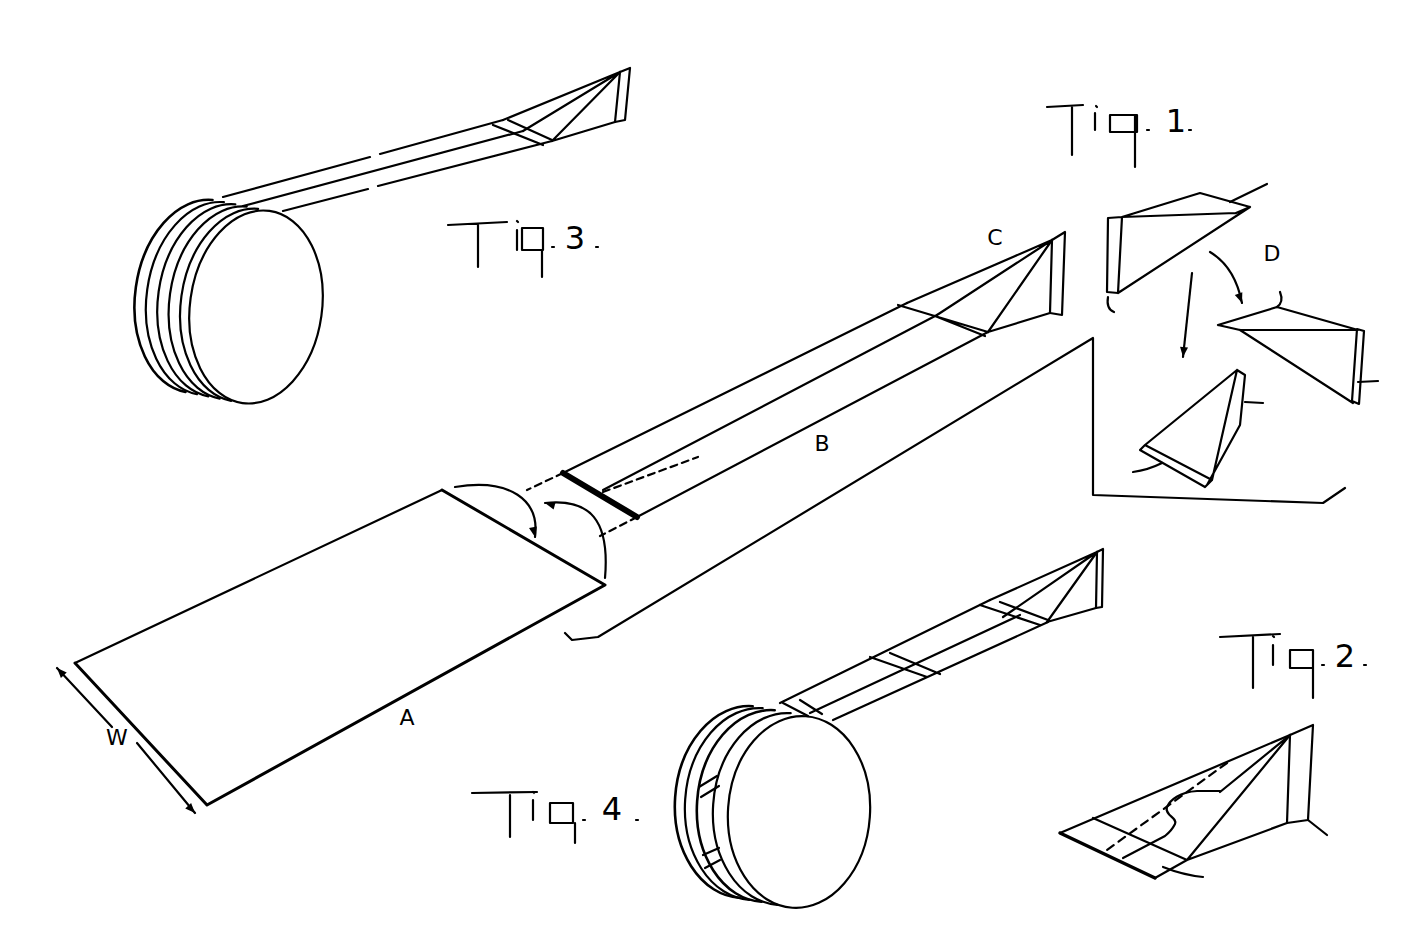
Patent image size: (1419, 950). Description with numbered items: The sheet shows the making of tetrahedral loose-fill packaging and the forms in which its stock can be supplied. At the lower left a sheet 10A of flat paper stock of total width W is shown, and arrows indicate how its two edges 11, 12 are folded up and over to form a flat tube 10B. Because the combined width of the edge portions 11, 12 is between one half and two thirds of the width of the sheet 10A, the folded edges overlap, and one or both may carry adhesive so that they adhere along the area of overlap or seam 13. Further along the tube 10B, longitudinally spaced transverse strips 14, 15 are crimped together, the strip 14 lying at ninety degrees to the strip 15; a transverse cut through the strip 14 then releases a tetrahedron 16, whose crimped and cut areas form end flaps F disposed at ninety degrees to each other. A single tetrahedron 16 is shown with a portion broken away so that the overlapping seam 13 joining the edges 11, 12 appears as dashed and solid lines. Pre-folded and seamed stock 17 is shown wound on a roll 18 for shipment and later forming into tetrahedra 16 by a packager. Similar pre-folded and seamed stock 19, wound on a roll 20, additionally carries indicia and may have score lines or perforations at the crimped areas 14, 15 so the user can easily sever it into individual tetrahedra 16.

In FIG. 1, the sheet of flat stock 10A is at (385, 608).
In FIG. 1, the flat tube 10B is at (819, 386).
In FIG. 1, the edge 11 is at (463, 660).
In FIG. 1, the edge 12 is at (344, 536).
In FIG. 1, the seam 13 is at (660, 463).
In FIG. 2, the seam 13 is at (1158, 828).
In FIG. 1, the transverse strip 14 is at (985, 337).
In FIG. 3, the transverse strip 14 is at (542, 145).
In FIG. 4, the transverse strip 14 is at (1046, 630).
In FIG. 1, the transverse strip 15 is at (1052, 317).
In FIG. 3, the transverse strip 15 is at (622, 122).
In FIG. 4, the transverse strip 15 is at (1097, 617).
In FIG. 1, the tetrahedron 16 is at (1170, 203).
In FIG. 3, the tetrahedron 16 is at (580, 83).
In FIG. 4, the tetrahedron 16 is at (1063, 558).
In FIG. 2, the tetrahedron 16 is at (1242, 743).
In FIG. 3, the pre-folded and seamed stock 17 is at (422, 142).
In FIG. 3, the roll 18 is at (300, 255).
In FIG. 4, the pre-folded and seamed stock 19 is at (900, 635).
In FIG. 4, the roll 20 is at (860, 793).